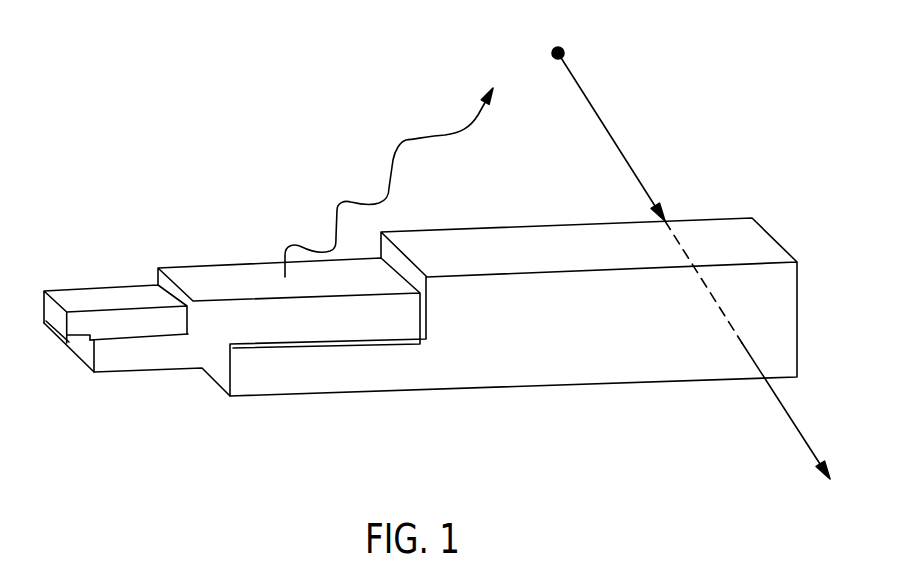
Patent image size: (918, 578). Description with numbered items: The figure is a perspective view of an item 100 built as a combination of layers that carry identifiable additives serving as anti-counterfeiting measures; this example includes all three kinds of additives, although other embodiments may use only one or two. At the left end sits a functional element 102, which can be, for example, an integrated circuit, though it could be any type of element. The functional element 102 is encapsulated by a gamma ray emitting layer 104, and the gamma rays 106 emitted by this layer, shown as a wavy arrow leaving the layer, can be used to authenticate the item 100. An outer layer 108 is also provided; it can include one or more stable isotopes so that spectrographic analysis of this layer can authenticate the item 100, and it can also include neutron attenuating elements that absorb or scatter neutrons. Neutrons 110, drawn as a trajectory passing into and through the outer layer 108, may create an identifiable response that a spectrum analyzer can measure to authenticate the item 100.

The item 100 is at (136, 161).
The functional element 102 is at (80, 327).
The gamma ray emitting layer 104 is at (163, 358).
The gamma rays 106 is at (395, 125).
The outer layer 108 is at (503, 373).
The neutrons 110 is at (610, 55).